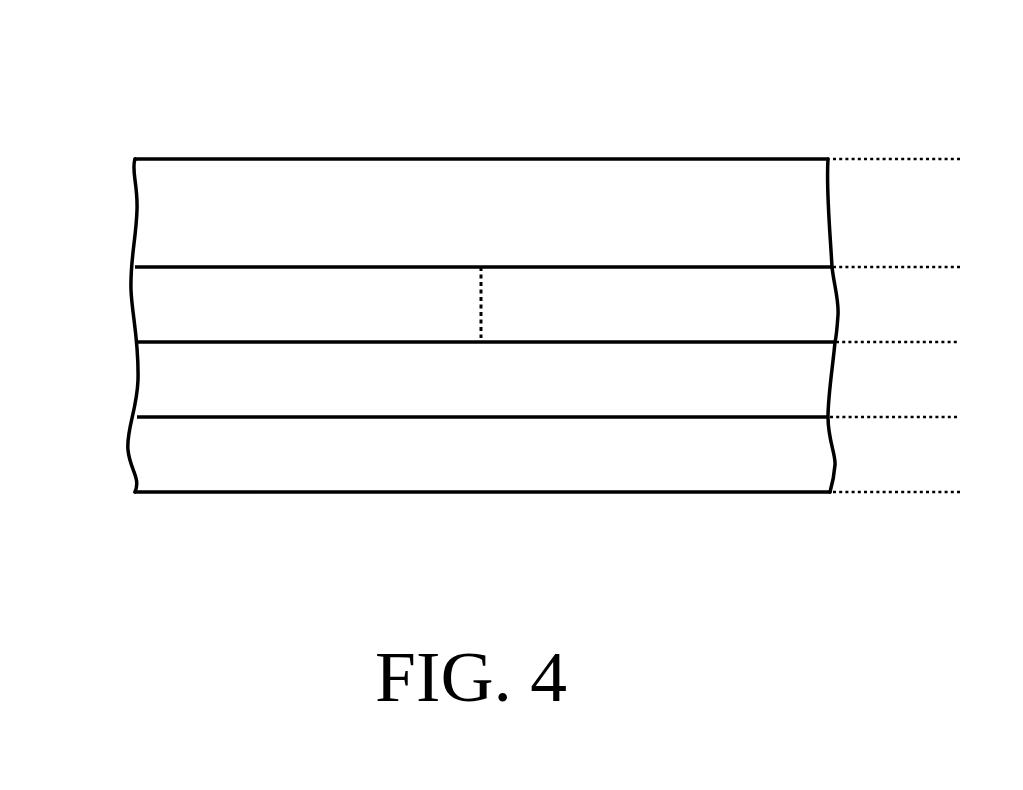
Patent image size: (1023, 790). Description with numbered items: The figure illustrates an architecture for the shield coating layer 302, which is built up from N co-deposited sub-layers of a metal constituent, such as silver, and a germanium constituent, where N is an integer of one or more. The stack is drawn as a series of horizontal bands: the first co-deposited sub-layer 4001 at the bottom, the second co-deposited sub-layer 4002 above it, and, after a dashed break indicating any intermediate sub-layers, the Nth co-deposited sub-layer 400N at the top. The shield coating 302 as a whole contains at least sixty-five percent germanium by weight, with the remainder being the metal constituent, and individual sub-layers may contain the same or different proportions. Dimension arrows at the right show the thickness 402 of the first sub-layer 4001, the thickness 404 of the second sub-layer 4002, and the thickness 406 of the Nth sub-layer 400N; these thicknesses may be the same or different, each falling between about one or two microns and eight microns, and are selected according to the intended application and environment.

The shield coating layer 302 is at (143, 101).
The Nth co-deposited sub-layer 400N is at (725, 224).
The second co-deposited sub-layer 4002 is at (729, 393).
The first co-deposited sub-layer 4001 is at (729, 468).
The thickness of first sub-layer 402 is at (941, 435).
The thickness of second sub-layer 404 is at (941, 360).
The thickness of Nth sub-layer 406 is at (937, 178).